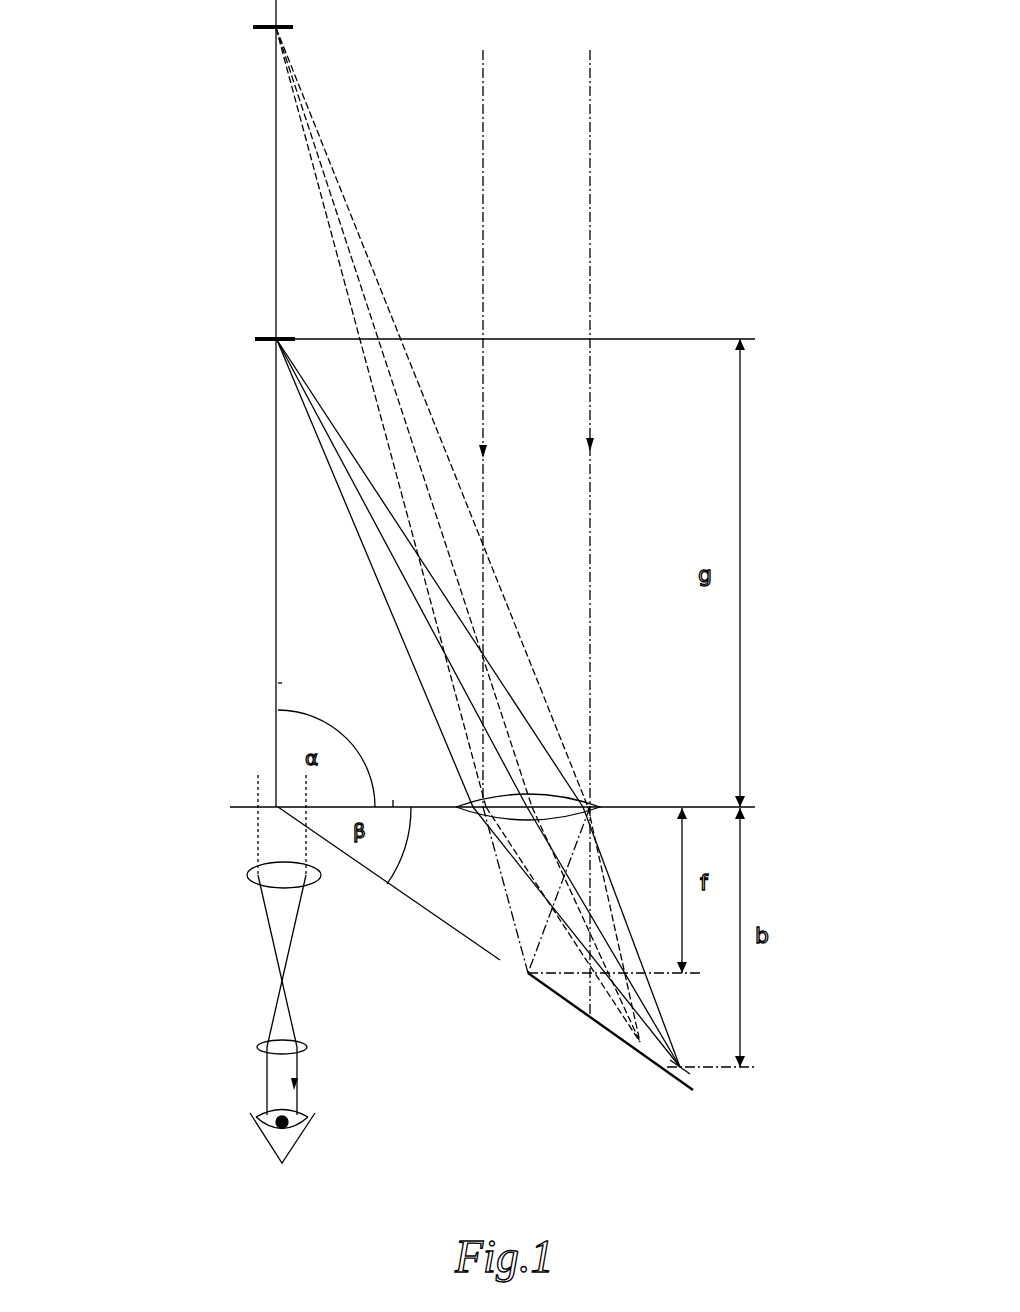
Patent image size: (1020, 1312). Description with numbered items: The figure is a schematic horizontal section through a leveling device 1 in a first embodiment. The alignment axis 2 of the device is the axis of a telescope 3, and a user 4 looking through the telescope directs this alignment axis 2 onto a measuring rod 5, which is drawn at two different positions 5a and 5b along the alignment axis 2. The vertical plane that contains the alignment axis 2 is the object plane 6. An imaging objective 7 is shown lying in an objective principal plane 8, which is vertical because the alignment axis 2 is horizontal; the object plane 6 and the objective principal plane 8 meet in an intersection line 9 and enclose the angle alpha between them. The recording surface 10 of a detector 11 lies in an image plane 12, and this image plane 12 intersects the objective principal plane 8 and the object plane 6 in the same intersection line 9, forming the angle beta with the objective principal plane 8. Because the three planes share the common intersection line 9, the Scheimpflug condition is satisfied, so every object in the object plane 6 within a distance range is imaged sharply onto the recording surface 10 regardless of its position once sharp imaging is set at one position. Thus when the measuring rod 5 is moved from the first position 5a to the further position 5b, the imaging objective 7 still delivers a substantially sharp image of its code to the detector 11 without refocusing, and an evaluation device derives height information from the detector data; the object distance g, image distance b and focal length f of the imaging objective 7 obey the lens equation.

The leveling device 1 is at (145, 896).
The alignment axis 2 is at (274, 592).
The telescope 3 is at (250, 1022).
The user 4 is at (250, 1145).
The measuring rod 5 is at (260, 34).
The first position of the measuring rod 5a is at (250, 336).
The further position of the measuring rod 5b is at (293, 30).
The object plane 6 is at (283, 683).
The imaging objective 7 is at (600, 802).
The objective principal plane 8 is at (393, 803).
The intersection line 9 is at (256, 806).
The recording surface 10 is at (645, 1038).
The detector 11 is at (690, 1078).
The image plane 12 is at (432, 916).